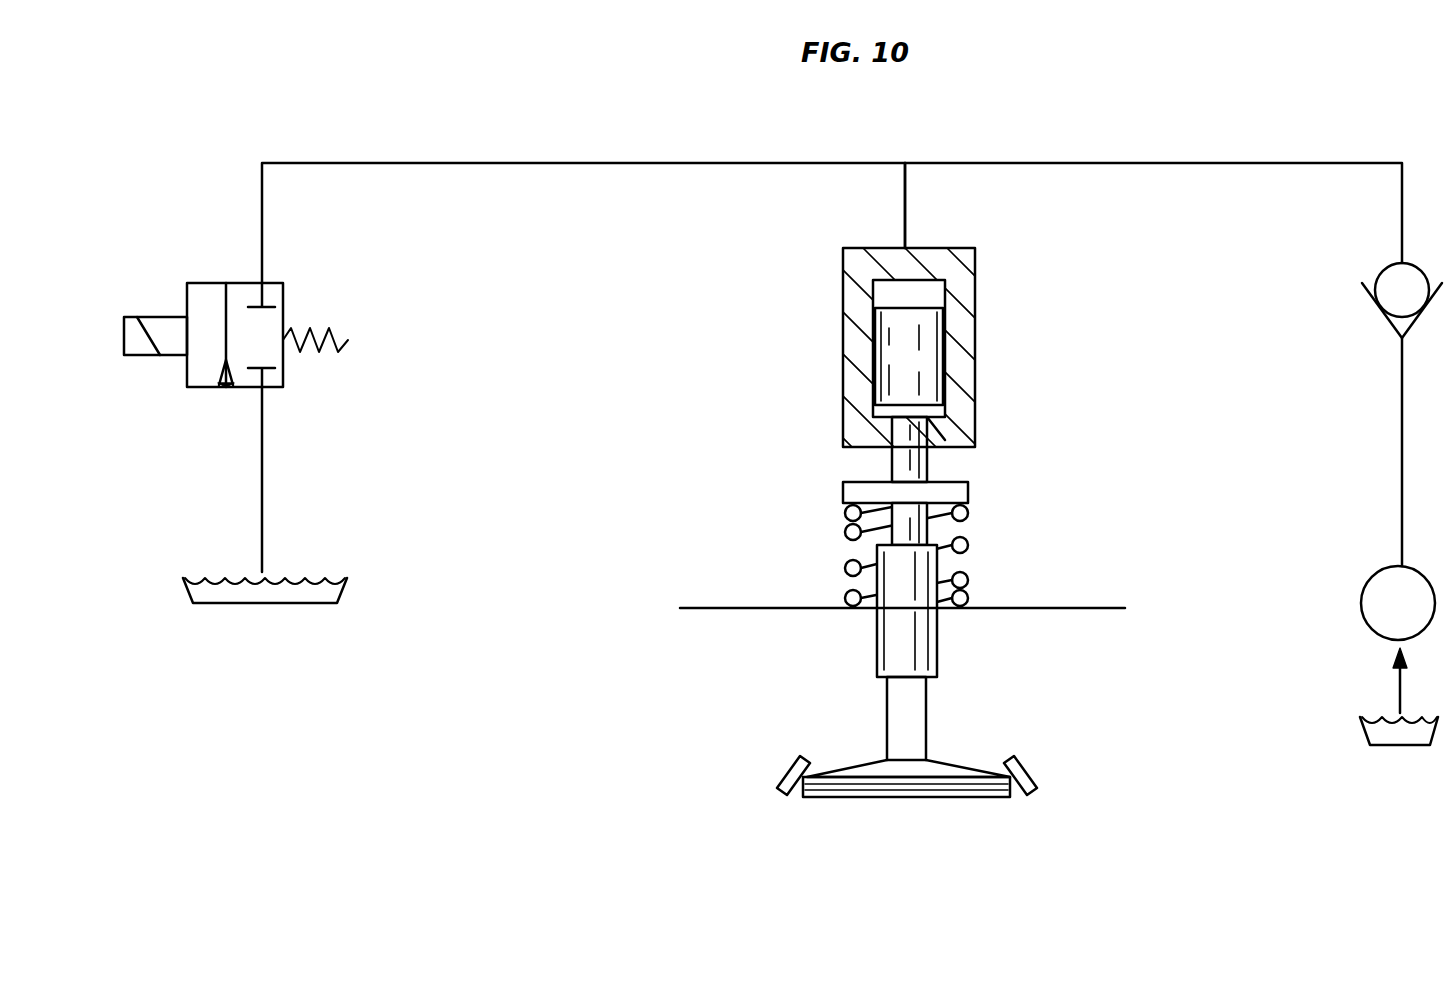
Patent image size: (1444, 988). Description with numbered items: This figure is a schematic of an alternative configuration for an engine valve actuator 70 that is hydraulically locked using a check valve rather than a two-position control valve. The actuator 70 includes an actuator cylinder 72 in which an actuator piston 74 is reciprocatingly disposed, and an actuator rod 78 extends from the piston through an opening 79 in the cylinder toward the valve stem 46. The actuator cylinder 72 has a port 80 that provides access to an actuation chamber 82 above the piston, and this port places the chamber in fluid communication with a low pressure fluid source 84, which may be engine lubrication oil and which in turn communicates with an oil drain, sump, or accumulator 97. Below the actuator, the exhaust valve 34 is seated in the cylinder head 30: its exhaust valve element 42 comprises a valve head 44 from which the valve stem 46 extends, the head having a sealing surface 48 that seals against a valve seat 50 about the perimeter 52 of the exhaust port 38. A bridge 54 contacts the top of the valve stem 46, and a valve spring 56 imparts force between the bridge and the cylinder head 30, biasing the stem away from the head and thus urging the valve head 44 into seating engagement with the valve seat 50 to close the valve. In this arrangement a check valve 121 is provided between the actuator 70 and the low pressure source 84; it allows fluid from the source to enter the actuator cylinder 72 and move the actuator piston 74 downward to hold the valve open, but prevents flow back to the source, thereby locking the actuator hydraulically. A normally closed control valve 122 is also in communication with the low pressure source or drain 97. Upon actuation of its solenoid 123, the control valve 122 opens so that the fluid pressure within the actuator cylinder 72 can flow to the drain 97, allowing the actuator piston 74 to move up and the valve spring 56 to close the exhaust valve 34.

The cylinder head 30 is at (741, 605).
The exhaust valve 34 is at (897, 751).
The exhaust port 38 is at (792, 771).
The exhaust valve element 42 is at (942, 686).
The valve head 44 is at (899, 797).
The valve stem 46 is at (893, 710).
The sealing surface 48 is at (855, 755).
The valve seat 50 is at (1008, 792).
The perimeter 52 is at (1027, 777).
The bridge 54 is at (963, 491).
The valve spring 56 is at (960, 579).
The valve actuator 70 is at (889, 330).
The actuator cylinder 72 is at (853, 293).
The actuator piston 74 is at (893, 341).
The actuator rod 78 is at (886, 452).
The opening 79 is at (932, 451).
The port 80 is at (902, 246).
The actuation chamber 82 is at (935, 294).
The low pressure fluid source 84 is at (1383, 595).
The drain 97 is at (267, 603).
The check valve 121 is at (1397, 283).
The control valve 122 is at (207, 283).
The solenoid 123 is at (152, 317).